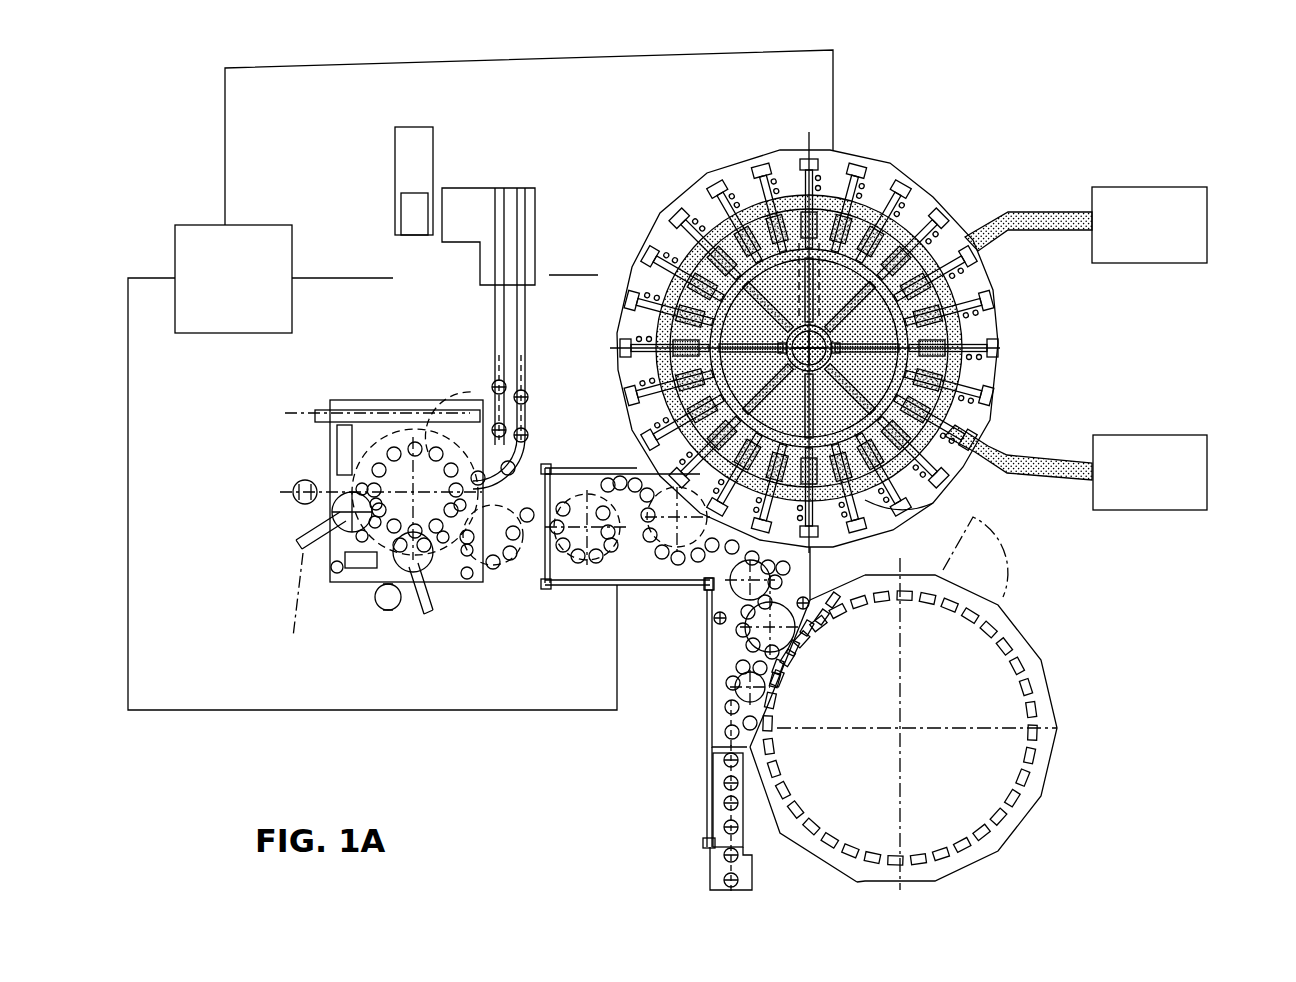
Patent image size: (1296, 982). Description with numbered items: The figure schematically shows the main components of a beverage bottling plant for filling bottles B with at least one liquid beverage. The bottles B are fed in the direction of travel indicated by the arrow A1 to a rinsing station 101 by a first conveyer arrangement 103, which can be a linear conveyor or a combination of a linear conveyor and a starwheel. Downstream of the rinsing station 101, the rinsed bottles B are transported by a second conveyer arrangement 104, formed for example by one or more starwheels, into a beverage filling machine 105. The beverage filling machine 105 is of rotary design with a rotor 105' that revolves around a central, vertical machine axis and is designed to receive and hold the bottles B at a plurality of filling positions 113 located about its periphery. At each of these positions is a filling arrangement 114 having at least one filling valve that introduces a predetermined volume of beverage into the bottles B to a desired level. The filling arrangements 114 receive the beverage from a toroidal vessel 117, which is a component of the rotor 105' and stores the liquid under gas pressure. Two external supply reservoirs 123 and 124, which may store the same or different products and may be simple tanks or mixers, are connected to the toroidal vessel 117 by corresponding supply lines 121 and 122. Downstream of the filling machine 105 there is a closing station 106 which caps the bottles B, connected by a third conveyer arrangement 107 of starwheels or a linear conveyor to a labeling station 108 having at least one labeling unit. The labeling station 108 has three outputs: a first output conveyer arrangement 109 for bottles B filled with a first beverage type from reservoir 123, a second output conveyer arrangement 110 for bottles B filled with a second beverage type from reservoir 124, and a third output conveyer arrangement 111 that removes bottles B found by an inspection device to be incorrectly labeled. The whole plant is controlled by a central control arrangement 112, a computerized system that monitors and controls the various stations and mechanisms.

The rinsing station 101 is at (1068, 620).
The first conveyer arrangement 103 is at (743, 812).
The second conveyer arrangement 104 is at (717, 650).
The beverage filling machine 105 is at (871, 342).
The rotor 105' is at (807, 331).
The closing station 106 is at (608, 463).
The third conveyer arrangement 107 is at (555, 600).
The labeling station 108 is at (364, 628).
The first output conveyer arrangement 109 is at (523, 382).
The second output conveyer arrangement 110 is at (495, 320).
The third output conveyer arrangement 111 is at (370, 400).
The central control arrangement 112 is at (233, 279).
The filling positions 113 is at (982, 272).
The filling arrangement 114 is at (990, 380).
The toroidal vessel 117 is at (933, 503).
The supply line 121 is at (1033, 212).
The supply line 122 is at (1042, 455).
The external supply reservoir 123 is at (1200, 232).
The external supply reservoir 124 is at (1205, 480).
The direction of travel A1 is at (688, 800).
The bottles B is at (735, 828).